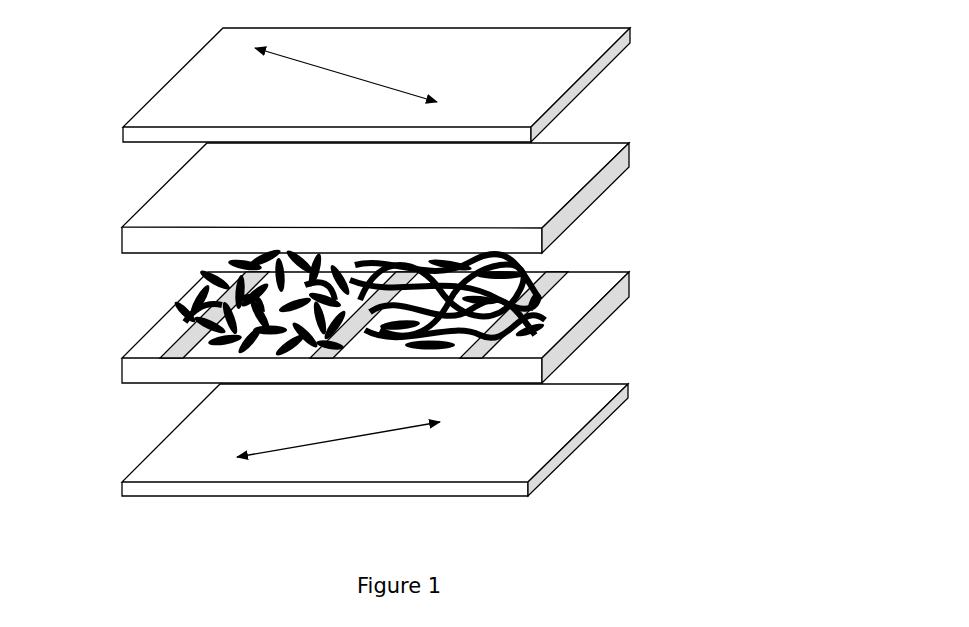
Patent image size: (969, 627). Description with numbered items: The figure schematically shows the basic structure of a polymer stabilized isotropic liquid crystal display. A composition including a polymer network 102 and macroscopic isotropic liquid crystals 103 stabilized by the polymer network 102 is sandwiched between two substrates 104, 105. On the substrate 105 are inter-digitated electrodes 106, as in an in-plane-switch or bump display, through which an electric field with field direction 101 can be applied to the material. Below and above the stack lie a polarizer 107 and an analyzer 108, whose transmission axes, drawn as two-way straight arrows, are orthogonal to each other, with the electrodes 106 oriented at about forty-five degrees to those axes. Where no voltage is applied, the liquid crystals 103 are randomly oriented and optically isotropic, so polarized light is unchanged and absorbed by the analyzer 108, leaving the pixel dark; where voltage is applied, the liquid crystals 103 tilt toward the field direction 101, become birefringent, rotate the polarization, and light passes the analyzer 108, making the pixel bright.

The field direction 101 is at (428, 262).
The polymer network 102 is at (542, 300).
The macroscopic isotropic liquid crystals 103 is at (187, 297).
The substrate 104 is at (632, 142).
The substrate 105 is at (595, 337).
The inter-digitated electrodes 106 is at (168, 350).
The polarizer 107 is at (572, 455).
The analyzer 108 is at (160, 103).